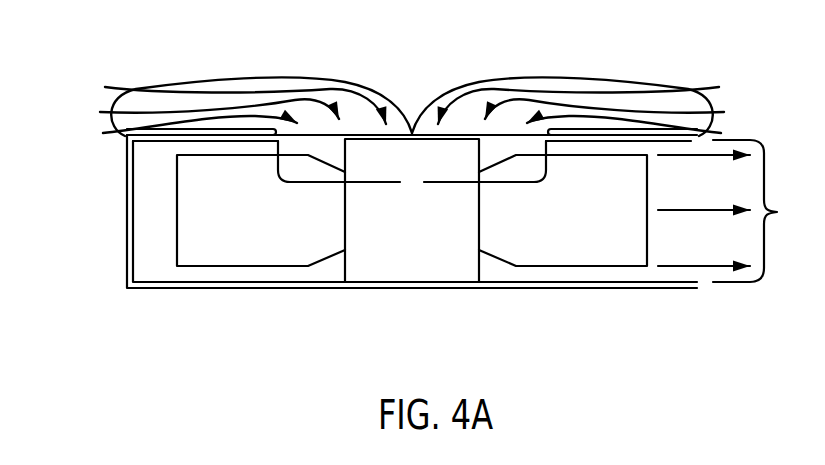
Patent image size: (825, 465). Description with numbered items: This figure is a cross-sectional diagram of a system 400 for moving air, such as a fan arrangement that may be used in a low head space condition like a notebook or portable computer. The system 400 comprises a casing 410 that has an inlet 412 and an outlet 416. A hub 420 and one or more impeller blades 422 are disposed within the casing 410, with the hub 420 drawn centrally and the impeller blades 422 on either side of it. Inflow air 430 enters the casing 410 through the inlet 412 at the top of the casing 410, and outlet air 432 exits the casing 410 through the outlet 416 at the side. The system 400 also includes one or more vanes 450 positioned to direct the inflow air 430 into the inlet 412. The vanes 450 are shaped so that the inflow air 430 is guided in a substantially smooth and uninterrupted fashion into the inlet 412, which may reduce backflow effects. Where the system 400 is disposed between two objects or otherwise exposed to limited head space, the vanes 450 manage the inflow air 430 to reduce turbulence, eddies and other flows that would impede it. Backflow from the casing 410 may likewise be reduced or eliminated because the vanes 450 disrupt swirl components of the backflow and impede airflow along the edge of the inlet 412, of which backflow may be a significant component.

The system 400 is at (121, 61).
The casing 410 is at (127, 217).
The inlet 412 is at (424, 182).
The outlet 416 is at (777, 212).
The hub 420 is at (373, 262).
The impeller blades 422 is at (177, 208).
The inflow air 430 is at (242, 102).
The outlet air 432 is at (706, 266).
The vanes 450 is at (460, 83).